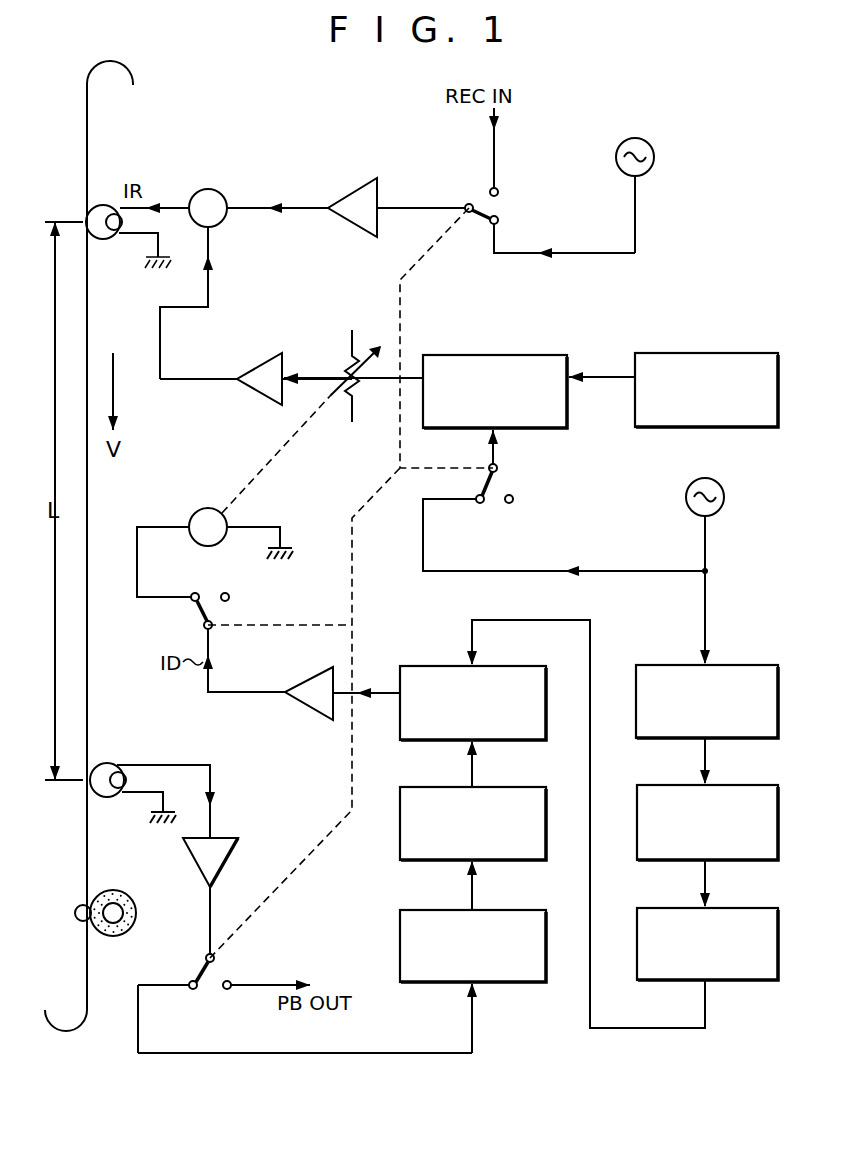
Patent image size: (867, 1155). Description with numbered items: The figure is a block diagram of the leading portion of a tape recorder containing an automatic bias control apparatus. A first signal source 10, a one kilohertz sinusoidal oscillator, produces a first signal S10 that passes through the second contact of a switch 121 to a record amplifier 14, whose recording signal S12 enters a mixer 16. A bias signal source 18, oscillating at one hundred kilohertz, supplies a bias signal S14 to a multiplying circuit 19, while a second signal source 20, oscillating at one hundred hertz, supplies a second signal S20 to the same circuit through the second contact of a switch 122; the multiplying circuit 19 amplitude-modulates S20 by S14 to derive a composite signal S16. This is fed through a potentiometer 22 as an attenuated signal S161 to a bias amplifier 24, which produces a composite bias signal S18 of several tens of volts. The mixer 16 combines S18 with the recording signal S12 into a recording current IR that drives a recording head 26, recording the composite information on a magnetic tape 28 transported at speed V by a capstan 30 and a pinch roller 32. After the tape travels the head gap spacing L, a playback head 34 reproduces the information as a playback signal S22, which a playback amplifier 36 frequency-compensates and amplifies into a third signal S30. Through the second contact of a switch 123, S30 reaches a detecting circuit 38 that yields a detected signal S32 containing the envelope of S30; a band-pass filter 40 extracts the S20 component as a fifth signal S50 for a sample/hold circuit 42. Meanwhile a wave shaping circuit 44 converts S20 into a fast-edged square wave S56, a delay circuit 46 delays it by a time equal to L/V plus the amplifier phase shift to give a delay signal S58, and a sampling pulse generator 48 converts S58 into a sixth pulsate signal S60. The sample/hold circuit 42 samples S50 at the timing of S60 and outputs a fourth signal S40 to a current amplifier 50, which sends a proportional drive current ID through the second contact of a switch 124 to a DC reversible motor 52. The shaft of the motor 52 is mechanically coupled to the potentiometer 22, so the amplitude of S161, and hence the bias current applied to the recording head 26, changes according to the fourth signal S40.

The first signal source 10 is at (655, 157).
The switch 121 is at (500, 210).
The switch 122 is at (500, 484).
The switch 123 is at (220, 968).
The switch 124 is at (215, 612).
The record amplifier 14 is at (355, 190).
The mixer 16 is at (208, 190).
The bias signal source 18 is at (757, 357).
The multiplying circuit 19 is at (494, 355).
The second signal source 20 is at (725, 497).
The potentiometer 22 is at (350, 335).
The bias amplifier 24 is at (250, 384).
The recording head 26 is at (110, 238).
The magnetic tape 28 is at (89, 126).
The capstan 30 is at (78, 912).
The pinch roller 32 is at (136, 920).
The playback head 34 is at (110, 765).
The playback amplifier 36 is at (215, 868).
The detecting circuit 38 is at (399, 948).
The band-pass filter 40 is at (399, 843).
The sample/hold circuit 42 is at (512, 665).
The wave shaping circuit 44 is at (636, 722).
The delay circuit 46 is at (637, 848).
The sampling pulse generator 48 is at (637, 970).
The current amplifier 50 is at (300, 700).
The motor 52 is at (200, 510).
The first signal S10 is at (545, 256).
The recording signal S12 is at (295, 210).
The bias signal S14 is at (598, 375).
The composite signal S16 is at (378, 382).
The attenuated signal S161 is at (320, 376).
The composite bias signal S18 is at (210, 278).
The second signal S20 is at (710, 571).
The playback signal S22 is at (215, 803).
The third signal S30 is at (475, 1018).
The detected signal S32 is at (475, 887).
The fourth signal S40 is at (380, 690).
The fifth signal S50 is at (475, 763).
The square wave signal S56 is at (708, 762).
The delay signal S58 is at (708, 882).
The sixth pulsate signal S60 is at (591, 635).